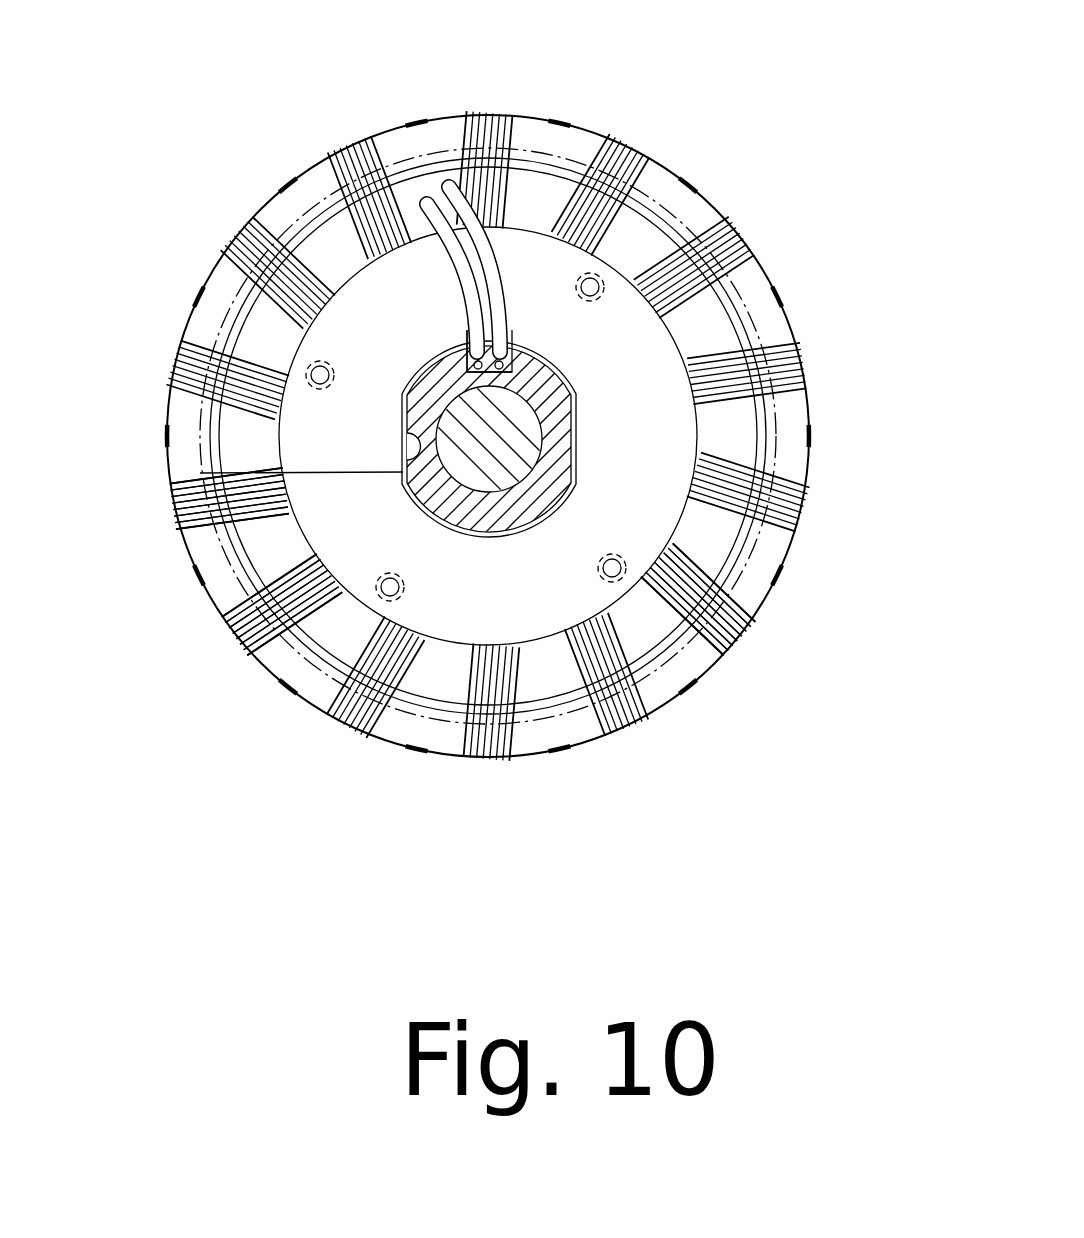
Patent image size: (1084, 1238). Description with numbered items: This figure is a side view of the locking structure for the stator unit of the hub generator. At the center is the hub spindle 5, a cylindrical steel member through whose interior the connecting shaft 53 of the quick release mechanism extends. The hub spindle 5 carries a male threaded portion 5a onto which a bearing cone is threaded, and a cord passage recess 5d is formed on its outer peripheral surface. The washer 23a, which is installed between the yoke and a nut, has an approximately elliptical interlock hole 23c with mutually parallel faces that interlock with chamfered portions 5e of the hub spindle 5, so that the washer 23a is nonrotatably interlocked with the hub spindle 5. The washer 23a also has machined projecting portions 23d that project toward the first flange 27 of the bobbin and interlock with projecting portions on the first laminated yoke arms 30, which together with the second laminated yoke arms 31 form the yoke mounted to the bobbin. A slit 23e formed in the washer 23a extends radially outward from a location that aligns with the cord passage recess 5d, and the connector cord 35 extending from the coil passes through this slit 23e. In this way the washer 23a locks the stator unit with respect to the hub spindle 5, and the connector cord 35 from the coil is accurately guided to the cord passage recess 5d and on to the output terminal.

The hub spindle 5 is at (581, 370).
The male threaded portion 5a is at (628, 577).
The cord passage recess 5d is at (500, 333).
The chamfered portions 5e is at (551, 439).
The washer 23a is at (258, 655).
The interlock hole 23c is at (247, 480).
The projecting portions 23d is at (750, 638).
The slit 23e is at (462, 336).
The first flange 27 is at (440, 678).
The first laminated yoke arms 30 is at (489, 762).
The second laminated yoke arms 31 is at (568, 752).
The connector cord 35 is at (445, 180).
The connecting shaft 53 is at (635, 439).